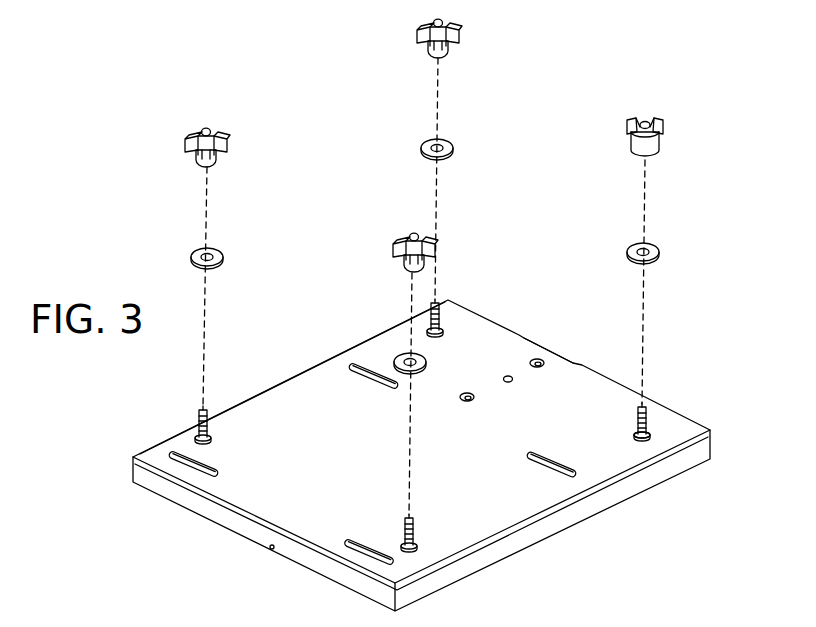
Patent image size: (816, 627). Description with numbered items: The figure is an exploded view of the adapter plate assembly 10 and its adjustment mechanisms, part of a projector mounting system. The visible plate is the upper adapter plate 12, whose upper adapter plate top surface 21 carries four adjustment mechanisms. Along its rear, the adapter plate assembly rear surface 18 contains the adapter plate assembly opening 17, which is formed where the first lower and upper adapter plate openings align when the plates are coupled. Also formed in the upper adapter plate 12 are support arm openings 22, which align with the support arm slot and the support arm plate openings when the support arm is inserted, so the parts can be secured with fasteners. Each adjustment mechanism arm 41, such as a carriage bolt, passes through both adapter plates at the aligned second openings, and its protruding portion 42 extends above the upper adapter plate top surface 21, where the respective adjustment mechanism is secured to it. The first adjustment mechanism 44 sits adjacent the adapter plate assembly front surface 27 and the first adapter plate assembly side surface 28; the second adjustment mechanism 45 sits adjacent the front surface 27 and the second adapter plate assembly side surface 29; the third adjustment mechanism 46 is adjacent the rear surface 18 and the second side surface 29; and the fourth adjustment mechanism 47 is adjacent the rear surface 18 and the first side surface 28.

The adapter plate assembly 10 is at (118, 492).
The upper adapter plate 12 is at (252, 490).
The adapter plate assembly opening 17 is at (548, 352).
The adapter plate assembly rear surface 18 is at (601, 373).
The upper adapter plate top surface 21 is at (547, 487).
The support arm opening 22 is at (472, 398).
The adapter plate assembly front surface 27 is at (348, 578).
The first adapter plate assembly side surface 28 is at (475, 567).
The second adapter plate assembly side surface 29 is at (318, 362).
The adjustment mechanism arm 41 is at (650, 437).
The protruding portion 42 is at (647, 415).
The first adjustment mechanism 44 is at (403, 242).
The second adjustment mechanism 45 is at (200, 132).
The third adjustment mechanism 46 is at (462, 40).
The fourth adjustment mechanism 47 is at (643, 128).